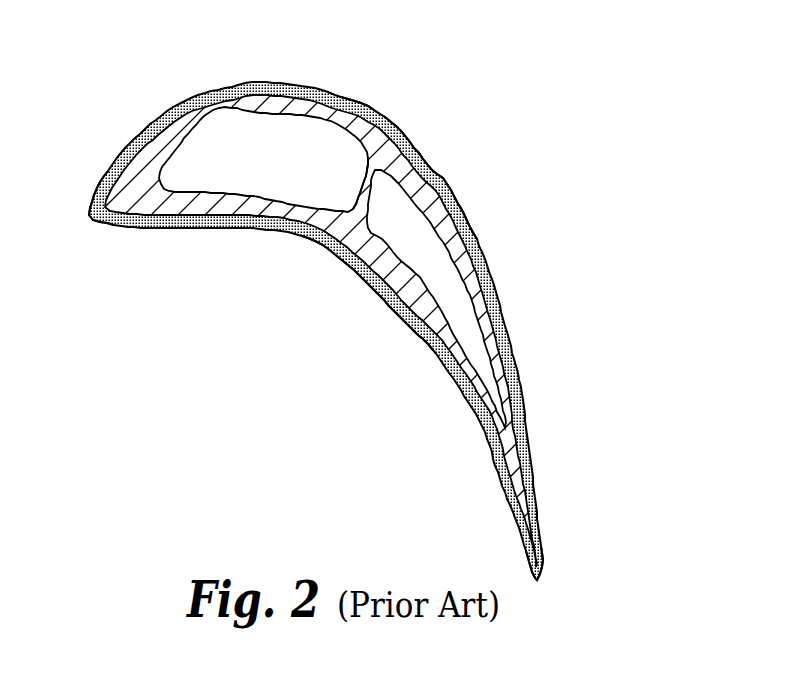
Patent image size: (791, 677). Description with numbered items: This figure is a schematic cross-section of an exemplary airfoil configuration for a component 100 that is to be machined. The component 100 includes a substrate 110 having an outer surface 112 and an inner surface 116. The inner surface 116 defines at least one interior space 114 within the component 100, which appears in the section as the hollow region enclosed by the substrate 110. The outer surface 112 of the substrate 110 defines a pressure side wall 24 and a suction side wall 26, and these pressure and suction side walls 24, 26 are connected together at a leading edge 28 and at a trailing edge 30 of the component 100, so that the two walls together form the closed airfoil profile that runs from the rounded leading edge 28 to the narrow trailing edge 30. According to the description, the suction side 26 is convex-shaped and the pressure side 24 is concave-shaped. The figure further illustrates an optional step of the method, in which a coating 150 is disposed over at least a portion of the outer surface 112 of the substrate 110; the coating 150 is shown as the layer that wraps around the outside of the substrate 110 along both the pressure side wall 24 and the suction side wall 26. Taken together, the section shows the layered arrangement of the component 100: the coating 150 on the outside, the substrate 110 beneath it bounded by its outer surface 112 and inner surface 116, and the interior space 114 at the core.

The component 100 is at (558, 74).
The coating 150 is at (463, 233).
The inner surface 116 is at (447, 203).
The interior space 114 is at (293, 135).
The outer surface 112 is at (493, 362).
The substrate 110 is at (395, 156).
The pressure side wall 24 is at (416, 158).
The suction side wall 26 is at (370, 277).
The leading edge 28 is at (97, 212).
The trailing edge 30 is at (540, 580).